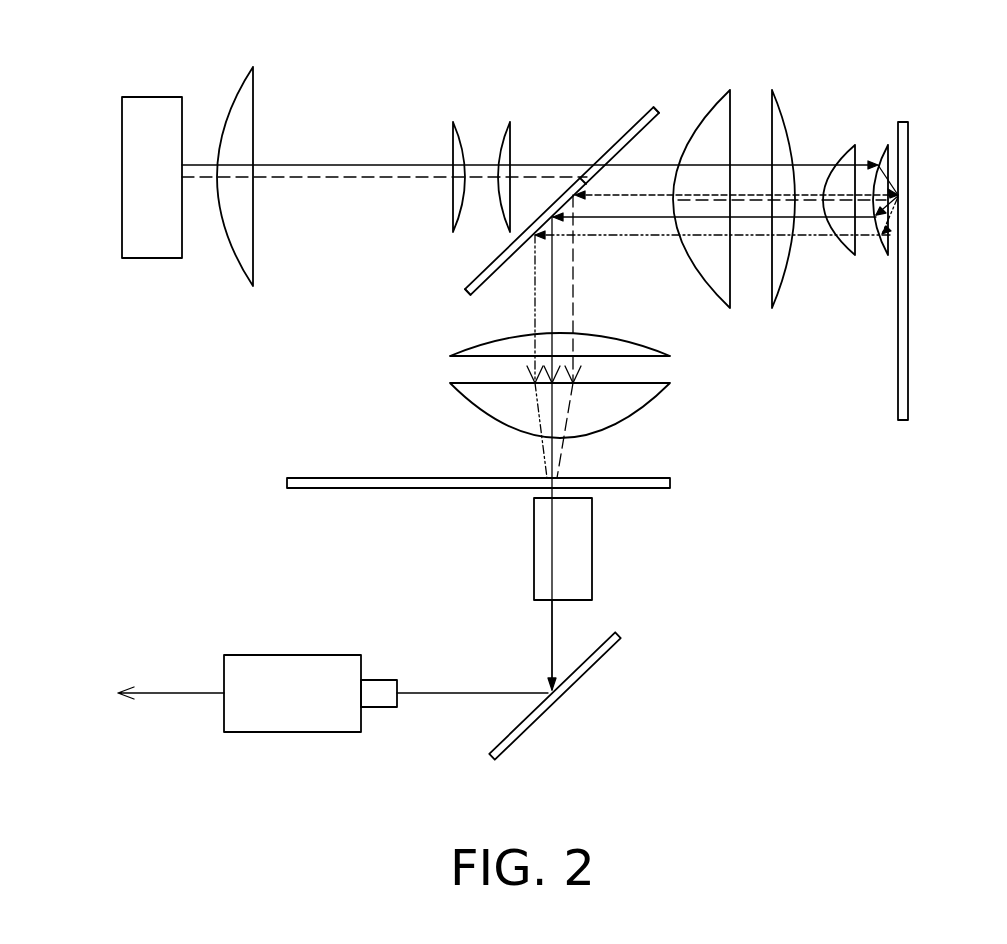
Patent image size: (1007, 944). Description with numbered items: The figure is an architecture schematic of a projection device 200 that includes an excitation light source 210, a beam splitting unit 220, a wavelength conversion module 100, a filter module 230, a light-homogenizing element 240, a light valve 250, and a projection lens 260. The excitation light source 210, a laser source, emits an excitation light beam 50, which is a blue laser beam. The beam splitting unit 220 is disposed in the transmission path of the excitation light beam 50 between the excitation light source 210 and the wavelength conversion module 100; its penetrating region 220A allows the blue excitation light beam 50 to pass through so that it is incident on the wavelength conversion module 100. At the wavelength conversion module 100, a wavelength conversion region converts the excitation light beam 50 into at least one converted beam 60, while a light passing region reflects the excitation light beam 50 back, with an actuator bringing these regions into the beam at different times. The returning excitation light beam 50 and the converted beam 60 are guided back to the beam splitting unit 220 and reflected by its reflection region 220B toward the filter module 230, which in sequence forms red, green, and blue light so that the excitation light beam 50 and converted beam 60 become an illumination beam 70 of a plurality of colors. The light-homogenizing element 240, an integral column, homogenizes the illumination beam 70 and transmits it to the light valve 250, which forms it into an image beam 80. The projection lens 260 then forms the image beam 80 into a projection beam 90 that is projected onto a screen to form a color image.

The projection device 200 is at (937, 791).
The excitation light source 210 is at (152, 97).
The excitation light beam 50 is at (377, 163).
The converted beam 60 is at (630, 197).
The beam splitting unit 220 is at (557, 192).
The penetrating region 220A is at (641, 120).
The reflection region 220B is at (477, 280).
The wavelength conversion module 100 is at (908, 145).
The filter module 230 is at (287, 483).
The light-homogenizing element 240 is at (593, 547).
The illumination beam 70 is at (550, 634).
The light valve 250 is at (540, 723).
The image beam 80 is at (445, 694).
The projection lens 260 is at (290, 733).
The projection beam 90 is at (178, 694).